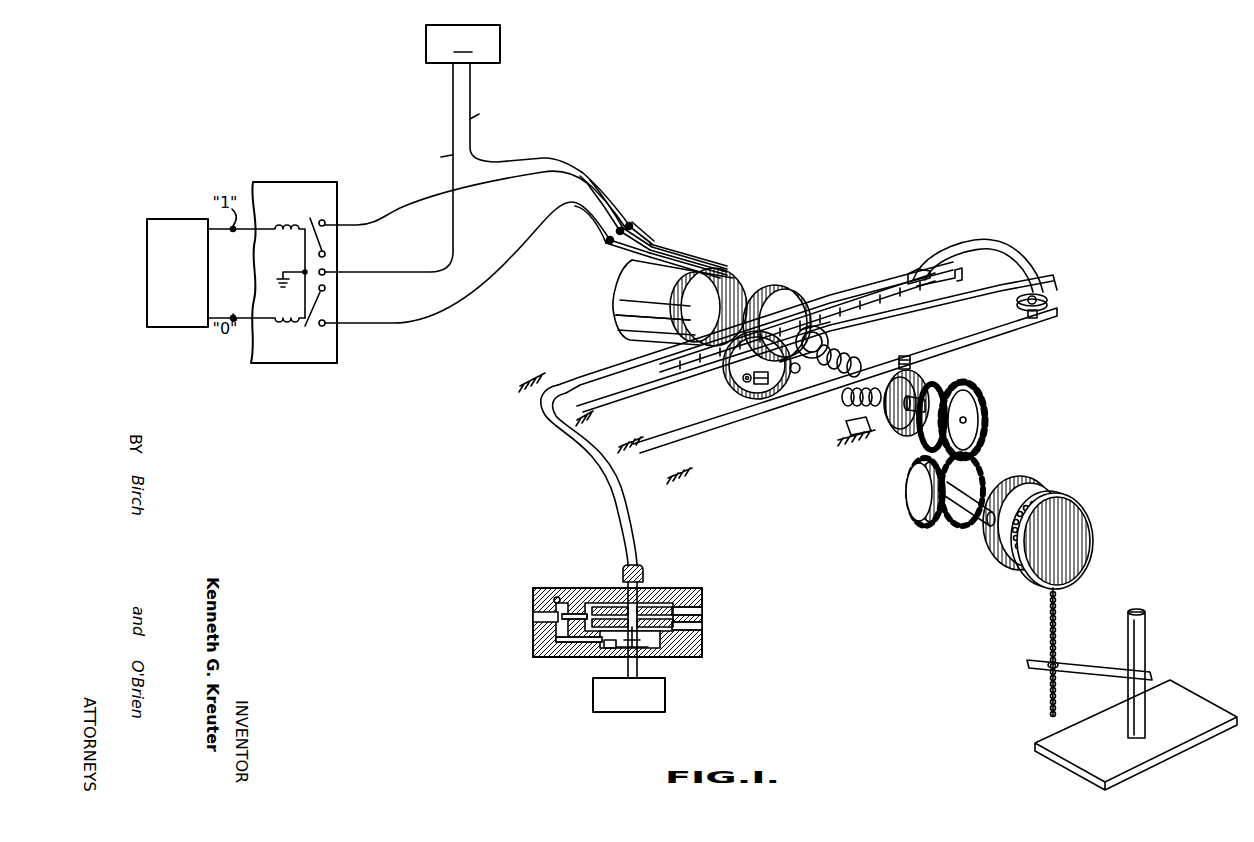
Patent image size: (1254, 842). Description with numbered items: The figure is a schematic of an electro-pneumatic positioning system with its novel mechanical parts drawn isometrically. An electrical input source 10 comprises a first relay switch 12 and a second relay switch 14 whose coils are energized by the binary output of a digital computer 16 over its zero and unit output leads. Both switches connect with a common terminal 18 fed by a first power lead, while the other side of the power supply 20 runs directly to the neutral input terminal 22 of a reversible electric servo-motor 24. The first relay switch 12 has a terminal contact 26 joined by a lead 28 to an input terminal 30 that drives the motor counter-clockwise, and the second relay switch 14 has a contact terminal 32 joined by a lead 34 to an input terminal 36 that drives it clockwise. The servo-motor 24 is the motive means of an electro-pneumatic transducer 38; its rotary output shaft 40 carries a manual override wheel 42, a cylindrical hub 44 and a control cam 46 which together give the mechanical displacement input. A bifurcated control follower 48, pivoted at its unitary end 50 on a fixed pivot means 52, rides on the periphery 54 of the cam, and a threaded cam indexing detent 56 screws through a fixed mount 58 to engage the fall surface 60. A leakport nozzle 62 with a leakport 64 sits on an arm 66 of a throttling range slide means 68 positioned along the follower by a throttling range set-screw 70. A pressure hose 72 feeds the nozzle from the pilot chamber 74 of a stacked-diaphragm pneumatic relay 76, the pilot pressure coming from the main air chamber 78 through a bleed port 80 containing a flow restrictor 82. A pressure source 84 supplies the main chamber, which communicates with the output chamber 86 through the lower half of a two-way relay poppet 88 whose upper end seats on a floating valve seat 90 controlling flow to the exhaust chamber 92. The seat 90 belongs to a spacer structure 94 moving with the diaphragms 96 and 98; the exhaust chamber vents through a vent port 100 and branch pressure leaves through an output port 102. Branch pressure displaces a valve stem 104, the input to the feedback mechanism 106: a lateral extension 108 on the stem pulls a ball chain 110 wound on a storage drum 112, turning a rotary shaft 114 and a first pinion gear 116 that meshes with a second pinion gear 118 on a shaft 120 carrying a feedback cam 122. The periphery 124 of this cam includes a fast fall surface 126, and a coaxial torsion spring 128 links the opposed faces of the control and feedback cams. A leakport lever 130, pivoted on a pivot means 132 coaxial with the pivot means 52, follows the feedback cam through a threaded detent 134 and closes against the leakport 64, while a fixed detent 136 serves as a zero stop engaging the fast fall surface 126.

The electrical input source 10 is at (303, 178).
The first relay switch 12 is at (302, 336).
The second relay switch 14 is at (304, 216).
The digital computer 16 is at (165, 284).
The common terminal 18 is at (326, 273).
The power supply 20 is at (455, 236).
The common or neutral input terminal 22 is at (621, 228).
The reversible electric servo-motor 24 is at (631, 295).
The terminal contact 26 is at (326, 325).
The lead 28 is at (462, 298).
The input terminal 30 is at (606, 241).
The contact terminal 32 is at (327, 221).
The lead 34 is at (439, 184).
The input terminal 36 is at (633, 226).
The electro-pneumatic transducer 38 is at (798, 274).
The rotary output shaft 40 is at (653, 304).
The manual override disk or wheel 42 is at (773, 290).
The cylindrical hub 44 is at (730, 378).
The control cam 46 is at (828, 341).
The control follower 48 is at (911, 314).
The unitary end 50 is at (627, 387).
The fixed pivot means 52 is at (534, 374).
The periphery 54 is at (798, 373).
The threaded cam indexing detent 56 is at (742, 384).
The fixed mount 58 is at (760, 386).
The fall surface 60 is at (808, 312).
The leakport nozzle 62 is at (1047, 298).
The leakport 64 is at (1038, 318).
The laterally extending arm 66 is at (970, 272).
The throttling range slide means 68 is at (948, 285).
The throttling range set-screw 70 is at (925, 276).
The pressure hose 72 is at (549, 434).
The pilot or signal chamber 74 is at (702, 595).
The stacked multiple diaphragm type pneumatic relay 76 is at (521, 601).
The main air supply chamber 78 is at (609, 650).
The bleed port 80 is at (545, 624).
The in-line flow restrictor 82 is at (558, 597).
The pressure source 84 is at (620, 704).
The output chamber 86 is at (664, 650).
The two-way relay poppet 88 is at (643, 600).
The diaphragm carried floating valve seat 90 is at (625, 606).
The exhaust chamber 92 is at (692, 611).
The spacer structure 94 is at (673, 600).
The diaphragm 96 is at (571, 650).
The diaphragm 98 is at (589, 606).
The vent port 100 is at (692, 627).
The output port 102 is at (680, 631).
The valve stem 104 is at (1147, 668).
The feedback mechanism 106 is at (1000, 473).
The integral lateral extension 108 is at (1109, 670).
The ball chain or cable 110 is at (1057, 602).
The storage drum 112 is at (1107, 549).
The rotary shaft 114 is at (972, 520).
The first pinion gear means 116 is at (922, 530).
The second pinion gear means 118 is at (980, 436).
The shaft 120 is at (971, 414).
The feedback cam means 122 is at (912, 426).
The periphery 124 is at (845, 402).
The fast fall surface 126 is at (938, 387).
The torsion spring means 128 is at (848, 360).
The feedback or leakport lever 130 is at (1010, 330).
The pivot means 132 is at (668, 471).
The vertically adjustable threaded detent 134 is at (907, 355).
The fixed detent 136 is at (851, 441).